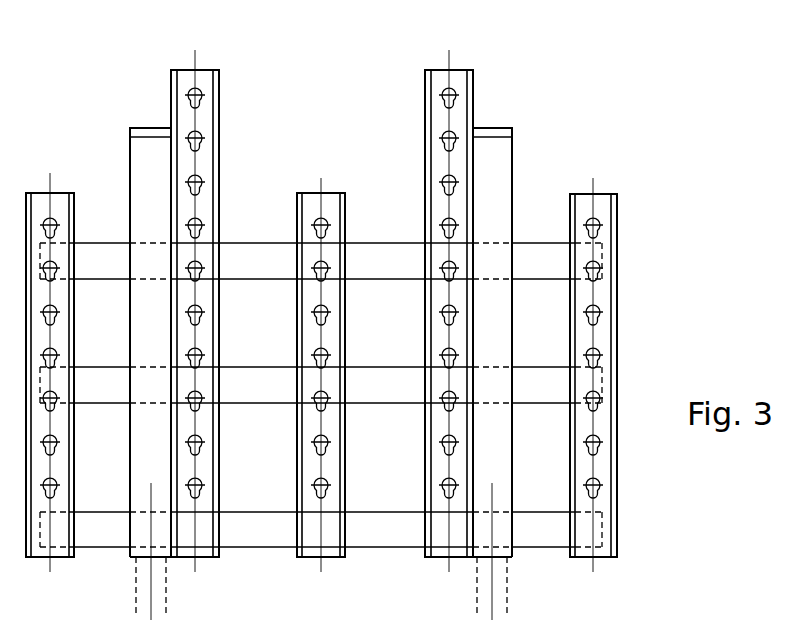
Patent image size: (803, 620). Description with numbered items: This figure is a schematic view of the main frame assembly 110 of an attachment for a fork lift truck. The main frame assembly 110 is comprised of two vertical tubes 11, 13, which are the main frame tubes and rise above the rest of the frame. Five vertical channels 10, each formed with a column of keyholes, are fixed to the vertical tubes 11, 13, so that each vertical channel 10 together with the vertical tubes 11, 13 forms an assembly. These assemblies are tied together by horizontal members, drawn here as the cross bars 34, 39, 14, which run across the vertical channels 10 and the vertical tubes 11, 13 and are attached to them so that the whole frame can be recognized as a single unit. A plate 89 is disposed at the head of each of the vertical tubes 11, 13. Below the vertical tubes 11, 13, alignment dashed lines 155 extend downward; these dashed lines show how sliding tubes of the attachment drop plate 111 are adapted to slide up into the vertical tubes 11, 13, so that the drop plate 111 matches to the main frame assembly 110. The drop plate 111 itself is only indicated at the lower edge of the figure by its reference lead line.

The vertical channel 10 is at (63, 192).
The vertical tube 11 is at (142, 175).
The vertical tube 13 is at (502, 175).
The upper cross beam 14 is at (372, 265).
The horizontal member 34 is at (381, 533).
The horizontal member 39 is at (372, 388).
The plate 89 is at (152, 131).
The main frame assembly 110 is at (580, 108).
The attachment drop plate 111 is at (645, 619).
The alignment dashed lines 155 is at (135, 615).